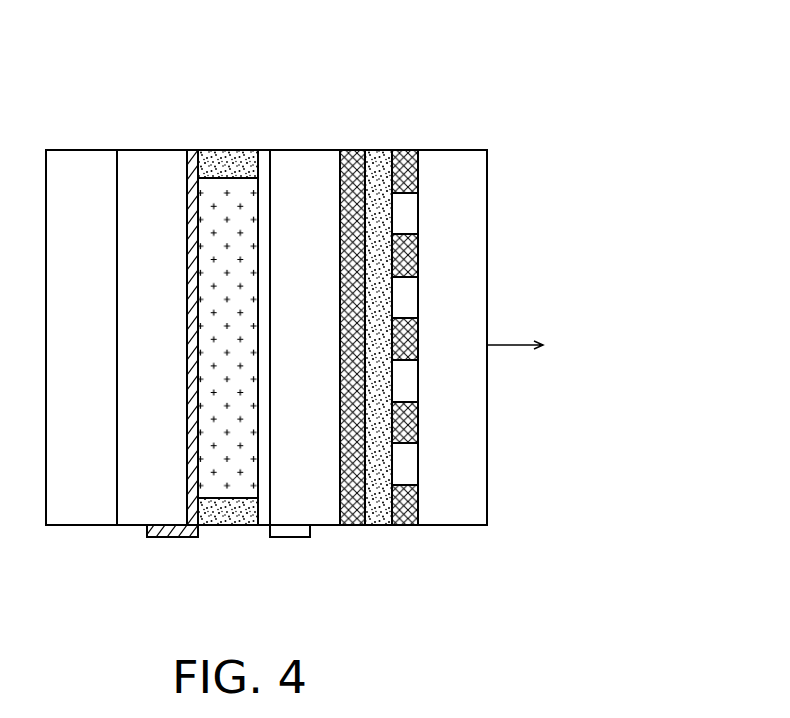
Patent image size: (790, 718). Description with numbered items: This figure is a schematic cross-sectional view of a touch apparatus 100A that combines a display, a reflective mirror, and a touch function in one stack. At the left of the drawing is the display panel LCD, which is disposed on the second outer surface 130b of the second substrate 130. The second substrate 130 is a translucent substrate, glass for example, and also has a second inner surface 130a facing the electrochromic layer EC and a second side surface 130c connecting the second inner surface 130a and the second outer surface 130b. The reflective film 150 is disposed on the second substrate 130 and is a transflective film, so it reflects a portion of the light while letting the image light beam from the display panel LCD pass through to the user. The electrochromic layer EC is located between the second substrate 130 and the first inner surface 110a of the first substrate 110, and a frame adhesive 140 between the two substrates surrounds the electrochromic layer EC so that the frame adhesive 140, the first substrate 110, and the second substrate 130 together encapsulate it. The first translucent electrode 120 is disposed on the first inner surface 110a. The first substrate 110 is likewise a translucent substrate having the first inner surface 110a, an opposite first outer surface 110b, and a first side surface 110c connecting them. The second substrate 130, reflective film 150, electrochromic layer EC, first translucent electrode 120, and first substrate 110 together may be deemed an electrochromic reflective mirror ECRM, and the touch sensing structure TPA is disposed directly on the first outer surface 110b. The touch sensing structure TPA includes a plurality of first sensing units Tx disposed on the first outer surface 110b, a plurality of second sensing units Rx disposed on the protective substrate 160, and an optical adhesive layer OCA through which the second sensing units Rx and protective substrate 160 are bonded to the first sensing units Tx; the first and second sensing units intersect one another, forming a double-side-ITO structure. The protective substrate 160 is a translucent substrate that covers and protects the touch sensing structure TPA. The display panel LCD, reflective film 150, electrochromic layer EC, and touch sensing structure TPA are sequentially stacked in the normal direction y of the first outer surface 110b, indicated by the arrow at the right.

The touch apparatus 100A is at (553, 610).
The display panel LCD is at (83, 167).
The second substrate 130 is at (137, 170).
The second inner surface 130a is at (198, 484).
The second outer surface 130b is at (106, 500).
The second side surface 130c is at (135, 536).
The reflective film 150 is at (193, 157).
The frame adhesive 140 is at (213, 172).
The electrochromic layer EC is at (240, 187).
The first translucent electrode 120 is at (263, 157).
The first substrate 110 is at (320, 165).
The first inner surface 110a is at (259, 482).
The first outer surface 110b is at (352, 503).
The first side surface 110c is at (327, 536).
The electrochromic reflective mirror ECRM is at (328, 73).
The touch sensing structure TPA is at (430, 43).
The first sensing unit Tx is at (358, 163).
The optical adhesive layer OCA is at (380, 160).
The second sensing unit Rx is at (405, 157).
The protective substrate 160 is at (460, 163).
The normal direction y is at (515, 345).